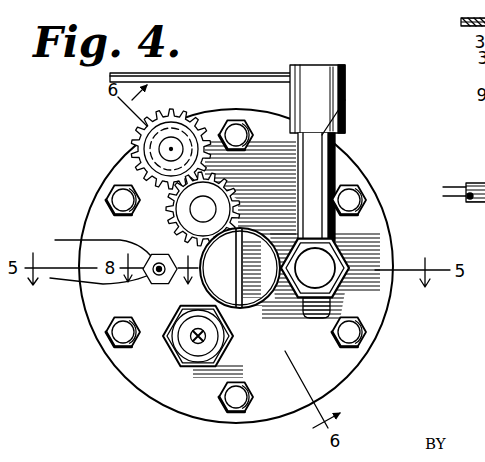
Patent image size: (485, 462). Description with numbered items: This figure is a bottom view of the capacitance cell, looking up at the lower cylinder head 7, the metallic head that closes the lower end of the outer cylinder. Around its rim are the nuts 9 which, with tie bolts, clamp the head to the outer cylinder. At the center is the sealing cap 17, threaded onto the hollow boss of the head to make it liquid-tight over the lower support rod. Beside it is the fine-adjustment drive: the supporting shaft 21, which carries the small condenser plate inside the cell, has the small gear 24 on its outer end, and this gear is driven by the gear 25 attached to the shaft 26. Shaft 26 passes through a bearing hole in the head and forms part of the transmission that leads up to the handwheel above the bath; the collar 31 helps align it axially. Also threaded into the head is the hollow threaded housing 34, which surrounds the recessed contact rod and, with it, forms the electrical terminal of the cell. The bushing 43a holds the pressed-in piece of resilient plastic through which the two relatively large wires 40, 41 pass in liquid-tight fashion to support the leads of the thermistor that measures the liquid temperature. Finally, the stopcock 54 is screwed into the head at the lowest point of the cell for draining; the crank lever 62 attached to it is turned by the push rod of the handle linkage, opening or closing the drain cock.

The lower cylinder head 7 is at (386, 313).
The nuts 9 is at (240, 121).
The sealing cap 17 is at (231, 304).
The supporting shaft 21 is at (196, 210).
The small gear 24 is at (177, 239).
The gear 25 is at (158, 122).
The shaft 26 is at (173, 119).
The collar 31 is at (143, 146).
The hollow threaded housing 34 is at (174, 357).
The wire 40 is at (75, 285).
The wire 41 is at (78, 239).
The bushing 43a is at (163, 285).
The stopcock 54 is at (343, 264).
The crank lever 62 is at (243, 73).